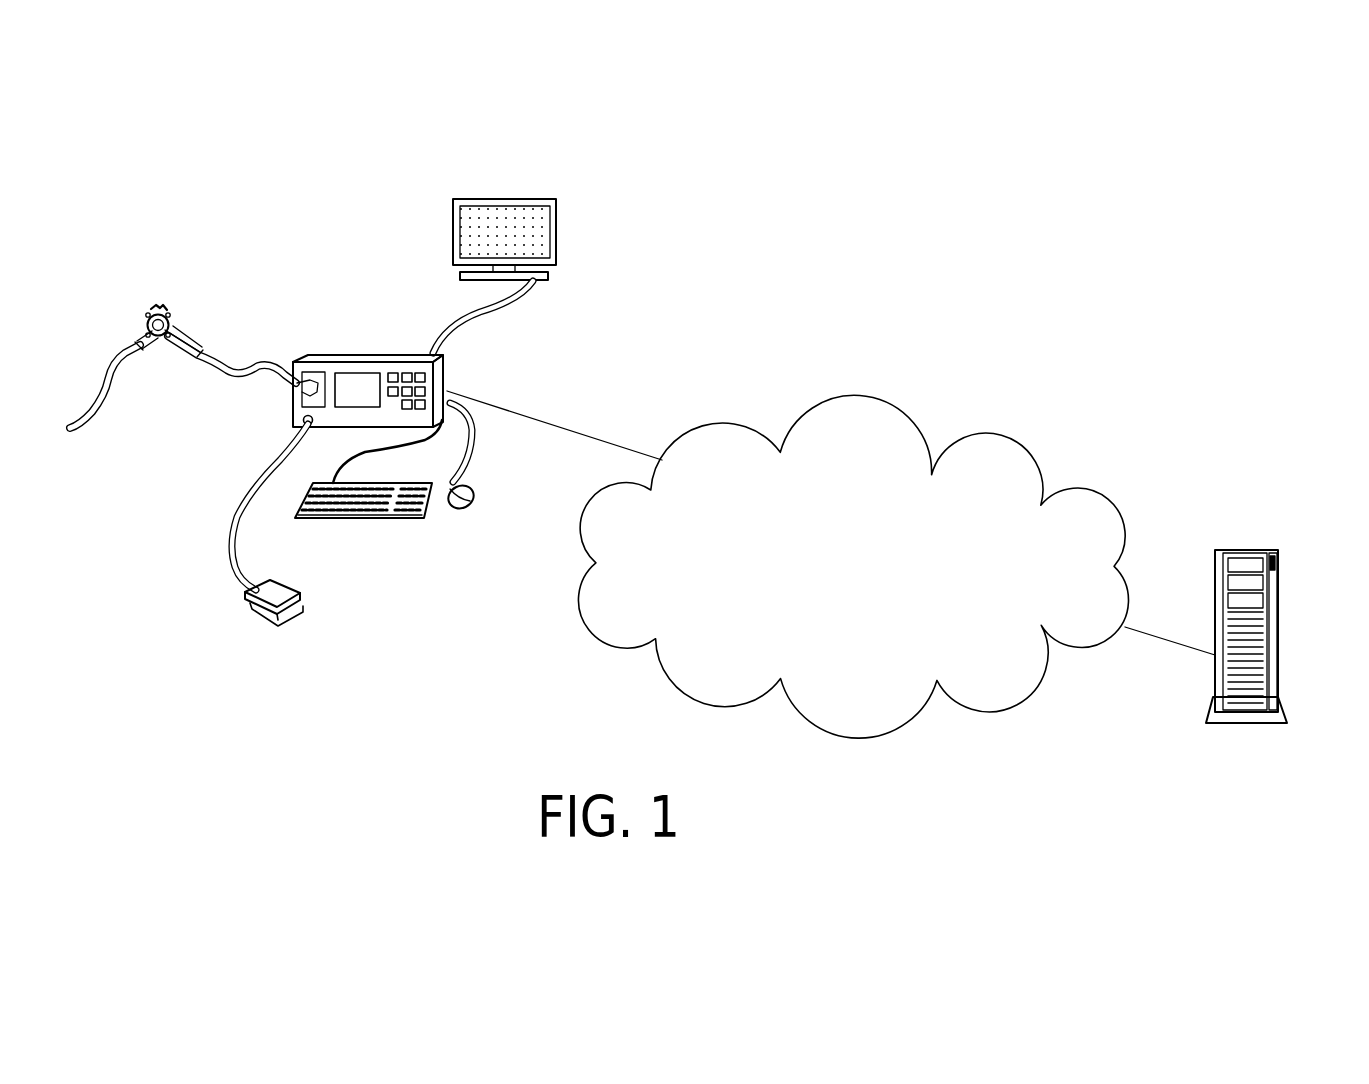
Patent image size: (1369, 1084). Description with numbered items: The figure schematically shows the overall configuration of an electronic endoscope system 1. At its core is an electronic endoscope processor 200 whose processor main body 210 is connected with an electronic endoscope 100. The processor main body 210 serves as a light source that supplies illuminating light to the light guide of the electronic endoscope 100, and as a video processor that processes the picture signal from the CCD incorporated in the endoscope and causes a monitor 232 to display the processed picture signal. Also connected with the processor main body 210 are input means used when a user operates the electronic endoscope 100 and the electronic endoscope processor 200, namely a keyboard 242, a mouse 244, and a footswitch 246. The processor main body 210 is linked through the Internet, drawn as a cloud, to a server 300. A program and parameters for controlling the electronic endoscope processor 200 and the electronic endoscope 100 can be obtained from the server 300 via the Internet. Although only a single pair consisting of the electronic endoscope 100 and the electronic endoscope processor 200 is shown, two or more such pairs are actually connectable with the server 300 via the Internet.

The electronic endoscope system 1 is at (1066, 372).
The electronic endoscope 100 is at (104, 382).
The electronic endoscope processor 200 is at (375, 247).
The processor main body 210 is at (330, 361).
The monitor 232 is at (558, 233).
The keyboard 242 is at (385, 518).
The mouse 244 is at (465, 492).
The footswitch 246 is at (268, 612).
The server 300 is at (1279, 632).